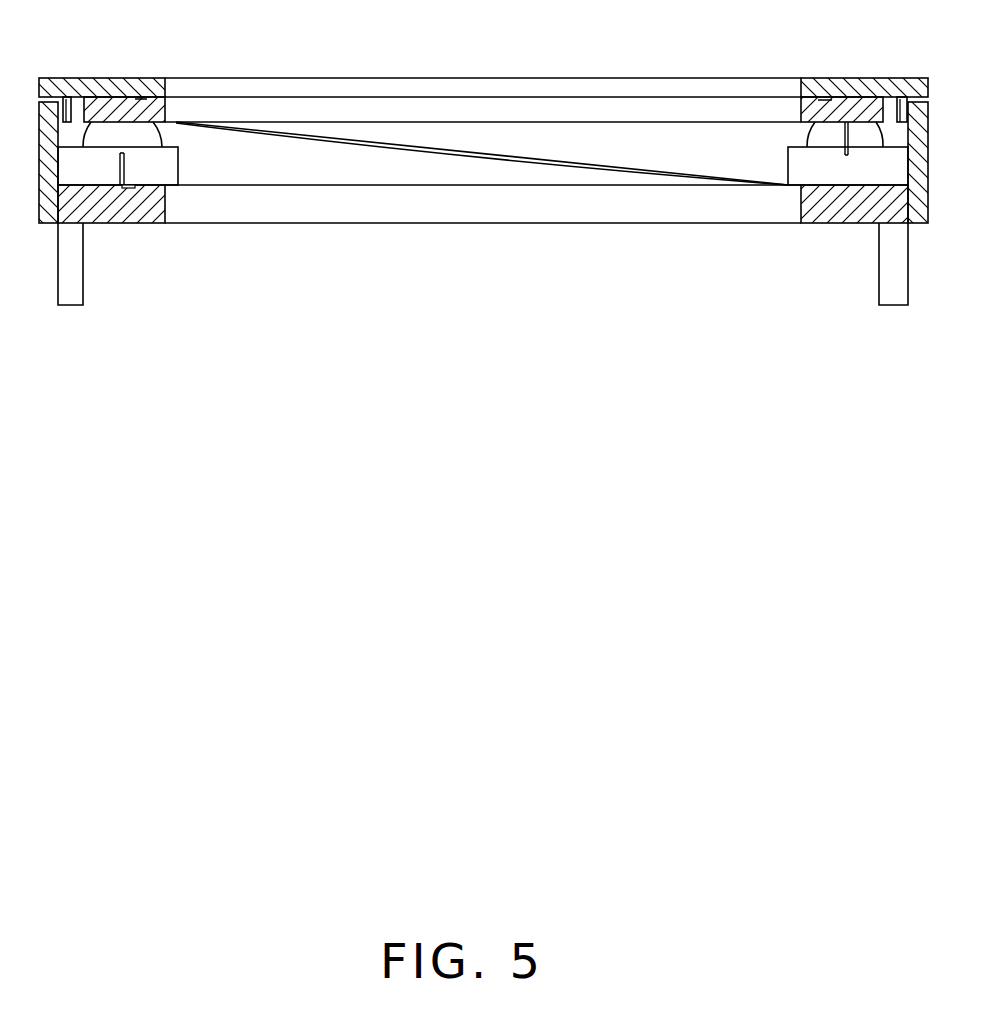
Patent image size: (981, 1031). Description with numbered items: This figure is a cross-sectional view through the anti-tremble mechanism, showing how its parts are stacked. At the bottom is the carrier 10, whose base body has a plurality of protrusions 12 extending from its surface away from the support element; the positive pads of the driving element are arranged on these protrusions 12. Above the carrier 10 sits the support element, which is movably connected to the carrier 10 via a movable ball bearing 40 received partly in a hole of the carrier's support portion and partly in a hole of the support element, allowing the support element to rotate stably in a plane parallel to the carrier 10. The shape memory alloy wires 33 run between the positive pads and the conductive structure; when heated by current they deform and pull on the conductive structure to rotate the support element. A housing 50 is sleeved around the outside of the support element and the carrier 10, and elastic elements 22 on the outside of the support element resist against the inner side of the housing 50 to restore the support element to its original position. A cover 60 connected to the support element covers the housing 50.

The carrier 10 is at (158, 210).
The protrusions 12 is at (67, 262).
The elastic elements 22 is at (63, 97).
The shape memory alloy wires 33 is at (422, 150).
The ball bearing 40 is at (116, 137).
The housing 50 is at (45, 195).
The cover 60 is at (50, 88).